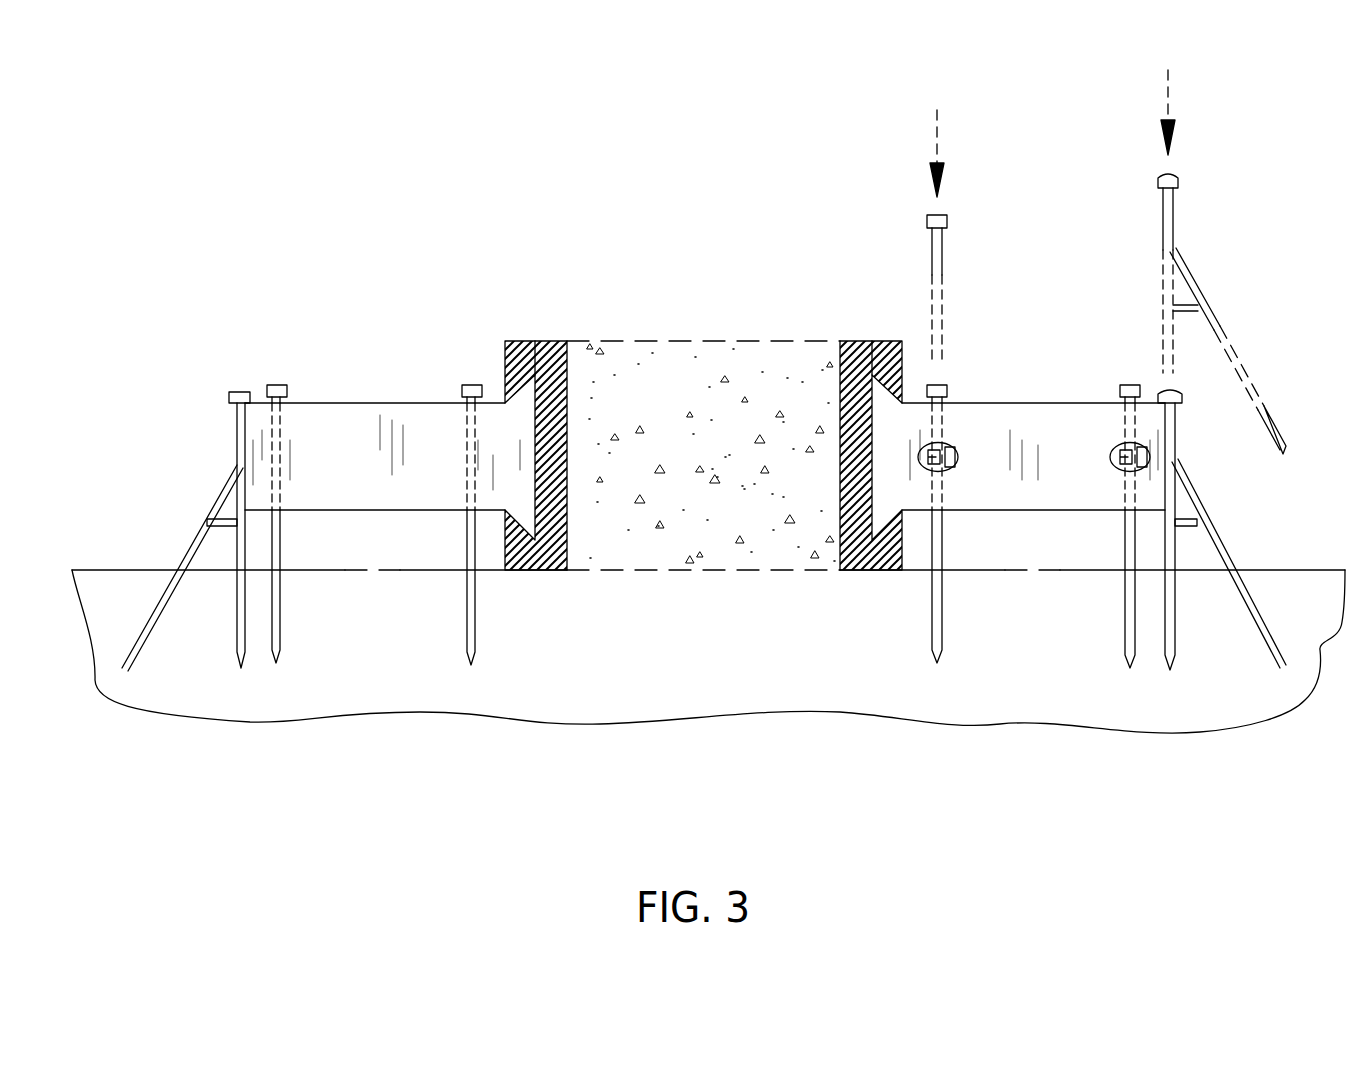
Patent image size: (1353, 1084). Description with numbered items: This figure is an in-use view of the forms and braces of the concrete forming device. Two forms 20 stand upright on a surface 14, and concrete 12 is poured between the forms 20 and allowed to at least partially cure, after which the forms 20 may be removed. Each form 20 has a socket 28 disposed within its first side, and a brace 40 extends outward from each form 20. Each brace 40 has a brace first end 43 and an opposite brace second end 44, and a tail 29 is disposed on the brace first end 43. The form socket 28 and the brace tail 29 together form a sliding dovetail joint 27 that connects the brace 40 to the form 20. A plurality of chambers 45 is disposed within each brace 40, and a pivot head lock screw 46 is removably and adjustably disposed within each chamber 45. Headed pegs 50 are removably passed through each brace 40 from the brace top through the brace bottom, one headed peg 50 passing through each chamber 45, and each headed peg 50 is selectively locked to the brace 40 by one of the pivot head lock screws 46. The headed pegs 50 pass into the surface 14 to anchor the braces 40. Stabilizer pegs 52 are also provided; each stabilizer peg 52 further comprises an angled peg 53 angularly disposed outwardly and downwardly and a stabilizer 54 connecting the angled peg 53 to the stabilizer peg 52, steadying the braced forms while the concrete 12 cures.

The concrete 12 is at (685, 365).
The surface 14 is at (375, 700).
The form 20 is at (537, 341).
The sliding dovetail joint 27 is at (482, 430).
The socket 28 is at (535, 455).
The tail 29 is at (515, 342).
The brace 40 is at (333, 420).
The brace first end 43 is at (567, 402).
The brace second end 44 is at (218, 424).
The chamber 45 is at (948, 443).
The pivot head lock screw 46 is at (1125, 458).
The headed peg 50 is at (278, 385).
The stabilizer peg 52 is at (245, 392).
The angled peg 53 is at (195, 530).
The stabilizer 54 is at (225, 498).